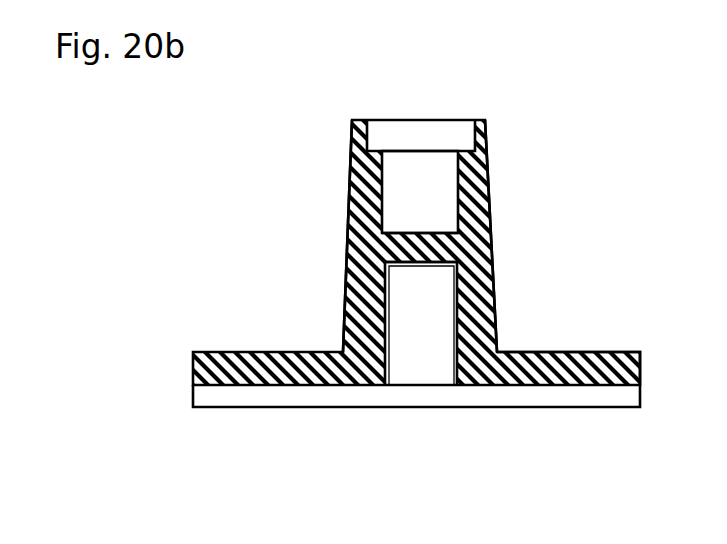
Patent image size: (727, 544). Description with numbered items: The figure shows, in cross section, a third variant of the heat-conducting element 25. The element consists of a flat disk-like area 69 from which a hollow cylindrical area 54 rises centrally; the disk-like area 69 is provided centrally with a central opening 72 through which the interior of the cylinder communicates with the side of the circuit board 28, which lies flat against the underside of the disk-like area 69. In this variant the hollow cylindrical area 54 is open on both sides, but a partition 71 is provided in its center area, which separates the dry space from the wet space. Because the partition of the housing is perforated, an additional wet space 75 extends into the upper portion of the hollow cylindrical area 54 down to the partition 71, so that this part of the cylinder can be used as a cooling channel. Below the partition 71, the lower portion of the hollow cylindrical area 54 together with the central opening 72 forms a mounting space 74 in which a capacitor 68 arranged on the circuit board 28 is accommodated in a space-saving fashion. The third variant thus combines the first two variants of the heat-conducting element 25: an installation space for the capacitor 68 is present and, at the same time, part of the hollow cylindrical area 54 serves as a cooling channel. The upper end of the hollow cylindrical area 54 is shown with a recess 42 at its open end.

The heat-conducting element 25 is at (485, 136).
The cap recess 42 is at (373, 138).
The hollow cylindrical area 54 is at (357, 181).
The additional wet space 75 is at (438, 192).
The partition 71 is at (492, 242).
The mounting space 74 is at (493, 282).
The capacitor 68 is at (405, 306).
The central opening 72 is at (420, 368).
The circuit board 28 is at (262, 393).
The disk-like area 69 is at (582, 370).